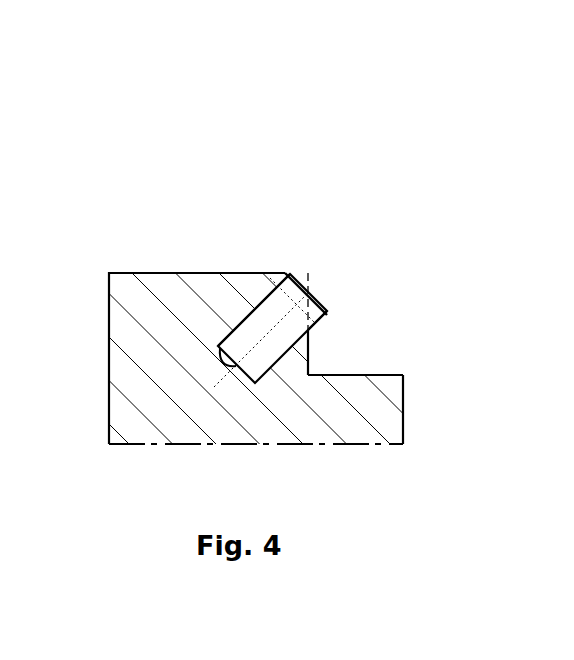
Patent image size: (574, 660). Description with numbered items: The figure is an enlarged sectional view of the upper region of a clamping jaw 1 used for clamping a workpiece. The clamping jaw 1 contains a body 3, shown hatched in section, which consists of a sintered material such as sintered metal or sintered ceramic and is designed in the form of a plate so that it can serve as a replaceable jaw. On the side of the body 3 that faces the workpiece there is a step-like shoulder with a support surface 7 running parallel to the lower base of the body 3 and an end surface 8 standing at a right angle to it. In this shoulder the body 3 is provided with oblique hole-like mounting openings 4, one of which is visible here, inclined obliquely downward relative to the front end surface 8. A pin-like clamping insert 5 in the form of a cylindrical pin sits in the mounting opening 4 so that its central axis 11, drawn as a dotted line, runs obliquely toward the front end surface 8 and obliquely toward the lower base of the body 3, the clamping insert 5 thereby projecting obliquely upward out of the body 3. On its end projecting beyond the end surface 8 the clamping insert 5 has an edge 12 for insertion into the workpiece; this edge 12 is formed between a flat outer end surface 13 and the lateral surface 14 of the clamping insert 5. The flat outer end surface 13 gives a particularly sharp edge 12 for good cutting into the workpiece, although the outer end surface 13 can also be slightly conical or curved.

The clamping jaw 1 is at (285, 200).
The body 3 is at (130, 382).
The mounting opening 4 is at (236, 329).
The clamping insert 5 is at (263, 362).
The support surface 7 is at (392, 375).
The end surface 8 is at (309, 356).
The central axis 11 is at (282, 322).
The edge 12 is at (329, 311).
The outer end surface 13 is at (318, 284).
The lateral surface 14 is at (325, 318).